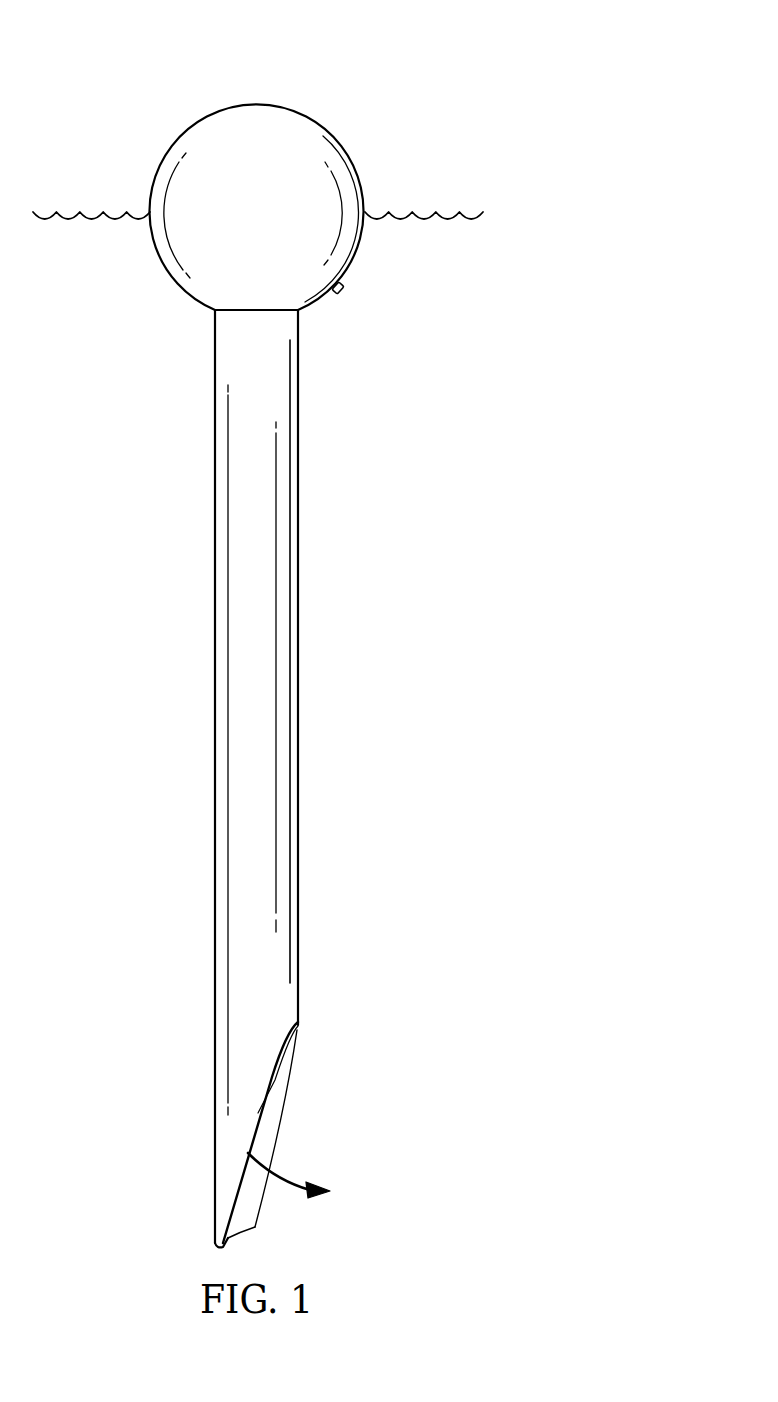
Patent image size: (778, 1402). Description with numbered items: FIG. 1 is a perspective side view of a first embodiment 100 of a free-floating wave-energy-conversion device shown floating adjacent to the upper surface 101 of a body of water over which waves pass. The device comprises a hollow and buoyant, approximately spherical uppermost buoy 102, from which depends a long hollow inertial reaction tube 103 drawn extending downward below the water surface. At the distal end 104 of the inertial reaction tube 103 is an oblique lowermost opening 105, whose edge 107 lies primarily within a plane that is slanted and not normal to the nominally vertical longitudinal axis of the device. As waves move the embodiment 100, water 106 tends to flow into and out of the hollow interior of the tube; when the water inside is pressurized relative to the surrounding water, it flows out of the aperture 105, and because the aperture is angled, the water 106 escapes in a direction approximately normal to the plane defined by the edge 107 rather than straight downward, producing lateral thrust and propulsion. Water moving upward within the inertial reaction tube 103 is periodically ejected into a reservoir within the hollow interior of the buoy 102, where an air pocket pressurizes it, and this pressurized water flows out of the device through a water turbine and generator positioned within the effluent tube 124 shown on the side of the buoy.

The embodiment 100 is at (80, 73).
The upper surface of a body of water 101 is at (92, 216).
The buoy 102 is at (312, 117).
The inertial reaction tube 103 is at (300, 613).
The distal end 104 is at (213, 1202).
The oblique lowermost opening 105 is at (284, 1069).
The water 106 is at (283, 1190).
The edge 107 is at (263, 1108).
The effluent tube 124 is at (352, 280).